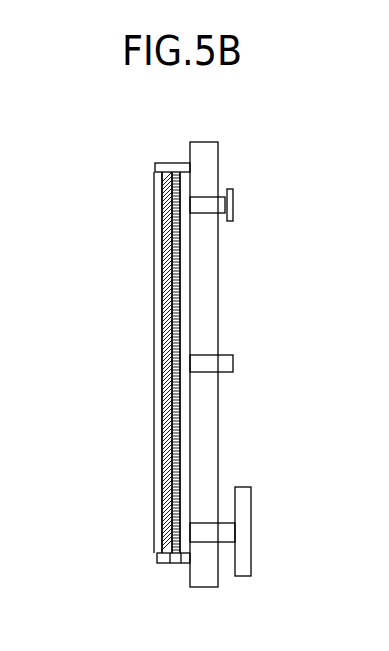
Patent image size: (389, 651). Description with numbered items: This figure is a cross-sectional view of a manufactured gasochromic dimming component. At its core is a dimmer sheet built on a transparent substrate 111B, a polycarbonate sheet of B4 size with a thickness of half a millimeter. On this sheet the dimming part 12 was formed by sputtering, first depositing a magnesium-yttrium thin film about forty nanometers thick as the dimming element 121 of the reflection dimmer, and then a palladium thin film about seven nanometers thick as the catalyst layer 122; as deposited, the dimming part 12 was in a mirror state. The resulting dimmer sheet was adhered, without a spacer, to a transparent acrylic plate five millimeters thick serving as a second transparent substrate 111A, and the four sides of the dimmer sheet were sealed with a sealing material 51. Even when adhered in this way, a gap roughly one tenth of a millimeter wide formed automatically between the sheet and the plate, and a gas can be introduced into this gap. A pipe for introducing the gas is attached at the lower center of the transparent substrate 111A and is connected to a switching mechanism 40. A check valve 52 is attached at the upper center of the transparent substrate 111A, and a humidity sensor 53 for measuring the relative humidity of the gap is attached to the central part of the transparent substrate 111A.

The transparent substrate 111A is at (205, 142).
The transparent substrate 111B is at (154, 363).
The dimming part 12 is at (107, 395).
The dimming element 121 is at (170, 563).
The catalyst layer 122 is at (181, 563).
The sealing material 51 is at (167, 163).
The check valve 52 is at (240, 205).
The humidity sensor 53 is at (241, 363).
The switching mechanism 40 is at (259, 532).